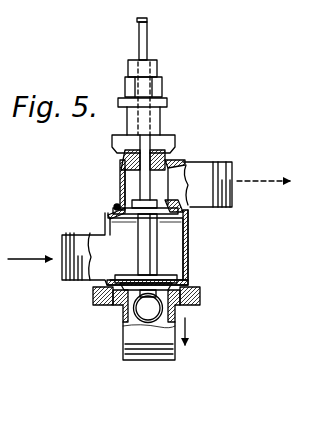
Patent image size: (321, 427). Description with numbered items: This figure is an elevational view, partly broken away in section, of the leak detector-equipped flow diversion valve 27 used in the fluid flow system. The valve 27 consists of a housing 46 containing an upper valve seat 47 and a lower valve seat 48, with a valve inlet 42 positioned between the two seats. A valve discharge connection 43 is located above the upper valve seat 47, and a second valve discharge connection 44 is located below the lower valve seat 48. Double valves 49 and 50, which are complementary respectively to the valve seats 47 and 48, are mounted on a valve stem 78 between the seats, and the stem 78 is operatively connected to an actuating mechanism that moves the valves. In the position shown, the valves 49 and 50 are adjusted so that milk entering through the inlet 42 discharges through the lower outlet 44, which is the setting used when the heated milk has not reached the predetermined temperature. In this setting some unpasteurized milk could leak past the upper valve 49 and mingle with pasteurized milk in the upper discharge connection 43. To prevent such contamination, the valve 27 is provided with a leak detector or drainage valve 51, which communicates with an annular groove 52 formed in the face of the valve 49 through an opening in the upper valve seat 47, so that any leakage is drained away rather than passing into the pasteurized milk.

The flow diversion valve 27 is at (186, 152).
The valve inlet 42 is at (72, 232).
The valve discharge connection 43 is at (212, 168).
The valve discharge connection 44 is at (130, 335).
The housing 46 is at (188, 255).
The upper valve seat 47 is at (186, 213).
The lower valve seat 48 is at (183, 280).
The valve 49 is at (135, 219).
The valve 50 is at (162, 275).
The leak detector or drainage valve 51 is at (115, 205).
The annular groove 52 is at (162, 205).
The valve stem 78 is at (145, 42).